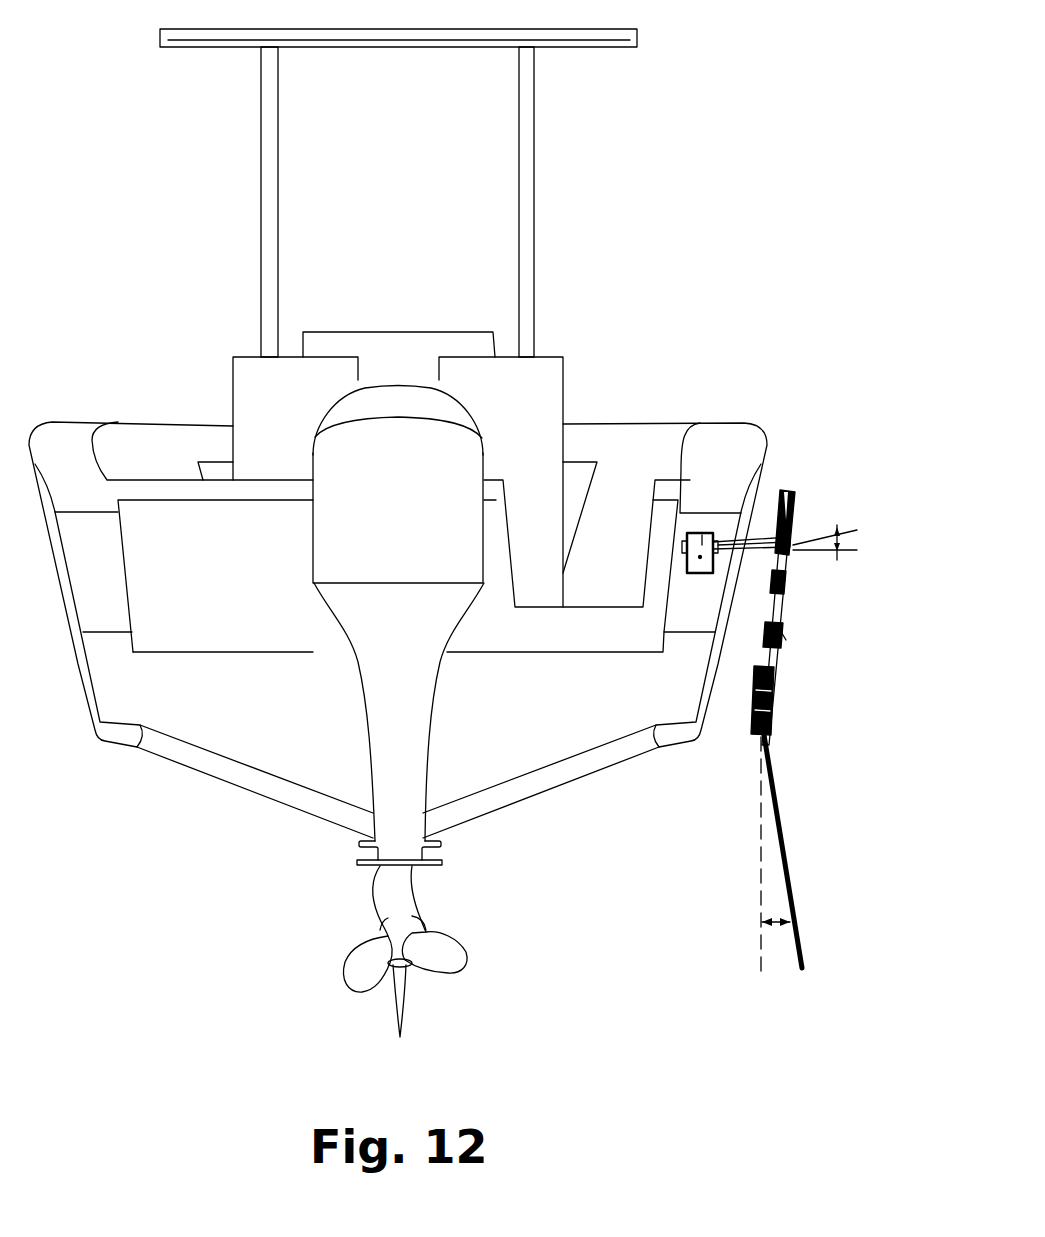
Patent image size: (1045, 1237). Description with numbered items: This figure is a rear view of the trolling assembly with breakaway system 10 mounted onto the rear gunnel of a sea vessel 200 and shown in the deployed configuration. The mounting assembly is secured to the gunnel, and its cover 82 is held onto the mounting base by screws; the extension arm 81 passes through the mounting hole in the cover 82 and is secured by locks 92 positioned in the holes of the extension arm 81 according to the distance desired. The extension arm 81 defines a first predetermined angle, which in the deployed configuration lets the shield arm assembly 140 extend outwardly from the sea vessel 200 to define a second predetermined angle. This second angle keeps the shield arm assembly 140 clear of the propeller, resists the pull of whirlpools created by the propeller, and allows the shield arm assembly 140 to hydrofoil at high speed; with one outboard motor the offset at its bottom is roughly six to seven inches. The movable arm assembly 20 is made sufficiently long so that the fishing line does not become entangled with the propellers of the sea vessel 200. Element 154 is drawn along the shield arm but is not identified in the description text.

The sea vessel 200 is at (116, 396).
The trolling assembly with breakaway system 10 is at (904, 372).
The lock 92 is at (688, 533).
The cover 82 is at (702, 543).
The extension arm 81 is at (766, 551).
The movable arm assembly 20 is at (806, 613).
The anchor spike 154 is at (777, 788).
The shield arm assembly 140 is at (740, 767).